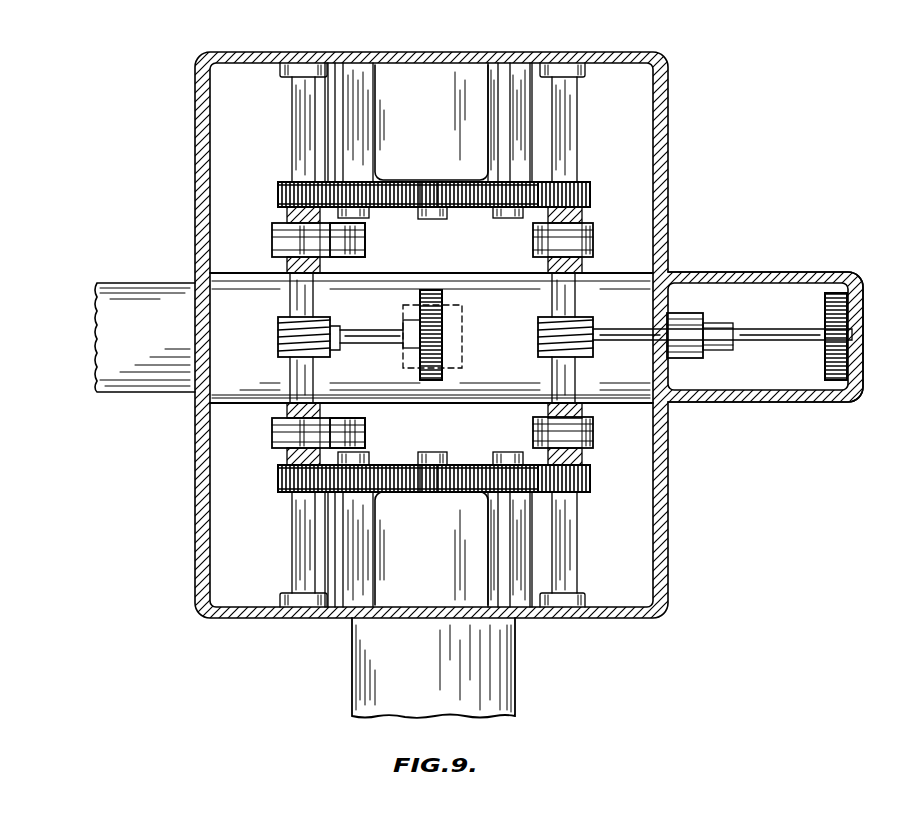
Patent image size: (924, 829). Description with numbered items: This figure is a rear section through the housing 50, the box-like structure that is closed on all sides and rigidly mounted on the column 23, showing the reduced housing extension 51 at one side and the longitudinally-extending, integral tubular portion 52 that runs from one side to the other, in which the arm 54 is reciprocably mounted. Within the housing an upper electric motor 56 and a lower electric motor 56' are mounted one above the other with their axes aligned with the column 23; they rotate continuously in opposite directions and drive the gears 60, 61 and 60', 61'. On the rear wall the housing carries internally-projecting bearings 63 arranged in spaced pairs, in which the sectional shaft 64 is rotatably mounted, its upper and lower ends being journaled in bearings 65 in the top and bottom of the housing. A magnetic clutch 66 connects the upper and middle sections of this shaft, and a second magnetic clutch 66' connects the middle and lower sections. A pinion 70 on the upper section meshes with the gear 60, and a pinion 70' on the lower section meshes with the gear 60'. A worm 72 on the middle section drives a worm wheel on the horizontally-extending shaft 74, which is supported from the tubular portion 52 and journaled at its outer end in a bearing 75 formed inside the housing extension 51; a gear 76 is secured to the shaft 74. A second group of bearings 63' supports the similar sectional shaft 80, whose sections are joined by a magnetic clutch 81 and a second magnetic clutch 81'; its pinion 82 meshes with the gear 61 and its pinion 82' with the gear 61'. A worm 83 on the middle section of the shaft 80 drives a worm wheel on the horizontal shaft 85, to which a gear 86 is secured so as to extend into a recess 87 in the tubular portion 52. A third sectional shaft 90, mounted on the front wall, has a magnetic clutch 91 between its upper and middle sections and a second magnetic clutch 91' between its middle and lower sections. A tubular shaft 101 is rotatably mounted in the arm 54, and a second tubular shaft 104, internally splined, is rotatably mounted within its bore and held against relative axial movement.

The column 23 is at (495, 675).
The housing 50 is at (205, 219).
The housing extension 51 is at (750, 275).
The tubular portion 52 is at (490, 390).
The arm 54 is at (158, 292).
The upper electric motor 56 is at (437, 105).
The lower electric motor 56' is at (437, 569).
The gear 60 is at (470, 229).
The gear 60' is at (470, 455).
The gear 61 is at (369, 229).
The gear 61' is at (371, 455).
The bearings 63 is at (456, 337).
The bearings 63' is at (280, 434).
The sectional shaft 64 is at (568, 133).
The bearings 65 is at (585, 75).
The magnetic clutch 66 is at (580, 240).
The second magnetic clutch 66' is at (583, 432).
The pinion 70 is at (583, 196).
The pinion 70' is at (585, 478).
The worm 72 is at (538, 336).
The horizontally-extending shaft 74 is at (624, 333).
The bearing 75 is at (850, 336).
The gear 76 is at (828, 306).
The sectional shaft 80 is at (300, 133).
The magnetic clutch 81 is at (301, 244).
The second magnetic clutch 81' is at (300, 433).
The pinion 82 is at (389, 196).
The pinion 82' is at (388, 480).
The worm 83 is at (278, 334).
The horizontally-extending shaft 85 is at (353, 335).
The gear 86 is at (442, 333).
The recess 87 is at (410, 322).
The sectional shaft 90 is at (330, 100).
The magnetic clutch 91 is at (367, 245).
The second magnetic clutch 91' is at (369, 431).
The tubular shaft 101 is at (690, 316).
The second tubular shaft 104 is at (722, 326).